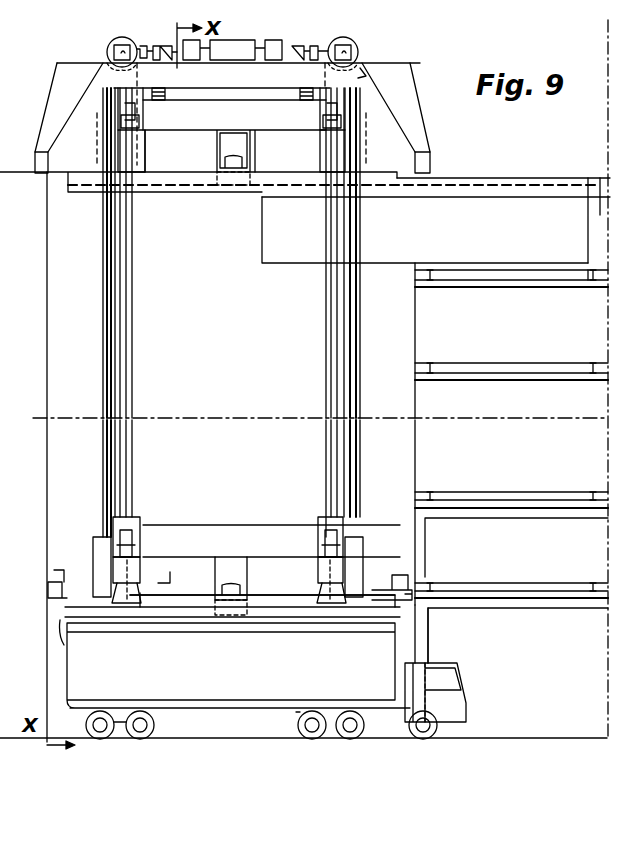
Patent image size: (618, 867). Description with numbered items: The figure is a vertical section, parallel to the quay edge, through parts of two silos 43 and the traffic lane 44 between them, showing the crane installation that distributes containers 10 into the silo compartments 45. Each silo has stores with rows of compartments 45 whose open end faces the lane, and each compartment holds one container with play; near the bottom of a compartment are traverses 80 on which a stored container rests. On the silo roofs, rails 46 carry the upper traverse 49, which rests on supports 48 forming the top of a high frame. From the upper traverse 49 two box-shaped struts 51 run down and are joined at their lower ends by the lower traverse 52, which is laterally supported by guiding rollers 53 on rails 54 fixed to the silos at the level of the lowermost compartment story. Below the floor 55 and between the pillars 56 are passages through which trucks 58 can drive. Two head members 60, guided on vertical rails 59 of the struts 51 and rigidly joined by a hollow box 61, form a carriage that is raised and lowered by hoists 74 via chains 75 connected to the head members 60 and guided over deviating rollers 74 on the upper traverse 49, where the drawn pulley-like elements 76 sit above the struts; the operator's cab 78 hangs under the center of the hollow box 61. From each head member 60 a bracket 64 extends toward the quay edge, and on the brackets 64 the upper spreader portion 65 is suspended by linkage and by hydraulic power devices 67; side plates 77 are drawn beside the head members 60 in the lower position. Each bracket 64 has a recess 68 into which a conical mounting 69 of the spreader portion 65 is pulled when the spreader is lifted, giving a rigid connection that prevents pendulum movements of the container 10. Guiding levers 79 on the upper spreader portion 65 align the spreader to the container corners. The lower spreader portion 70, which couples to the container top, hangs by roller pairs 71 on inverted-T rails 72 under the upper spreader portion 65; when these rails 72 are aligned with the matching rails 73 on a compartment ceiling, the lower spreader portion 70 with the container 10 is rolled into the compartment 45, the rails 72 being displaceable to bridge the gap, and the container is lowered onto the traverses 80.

The container 10 is at (272, 264).
The silo 43 is at (10, 186).
The traffic lane 44 is at (213, 360).
The compartment 45 is at (479, 332).
The rail 46 is at (50, 172).
The support 48 is at (56, 96).
The upper traverse 49 is at (363, 74).
The box-shaped strut 51 is at (130, 322).
The lower traverse 52 is at (273, 595).
The guiding roller 53 is at (48, 597).
The rail 54 is at (404, 585).
The floor 55 is at (510, 604).
The pillar 56 is at (430, 655).
The truck 58 is at (468, 710).
The vertical rail 59 is at (120, 368).
The head member 60 is at (144, 96).
The hollow box 61 is at (231, 524).
The bracket 64 is at (140, 142).
The upper spreader portion 65 is at (188, 172).
The hydraulic power device 67 is at (132, 540).
The recess 68 is at (141, 572).
The conical mounting 69 is at (121, 606).
The lower spreader portion 70 is at (306, 198).
The roller pair 71 is at (500, 186).
The rail 72 is at (182, 193).
The rail 73 is at (599, 186).
The hoist 74 is at (128, 50).
The chain 75 is at (104, 288).
The pulley 76 is at (110, 52).
The side plate 77 is at (95, 546).
The operator's cab 78 is at (233, 563).
The guiding lever 79 is at (63, 640).
The traverse 80 is at (593, 282).